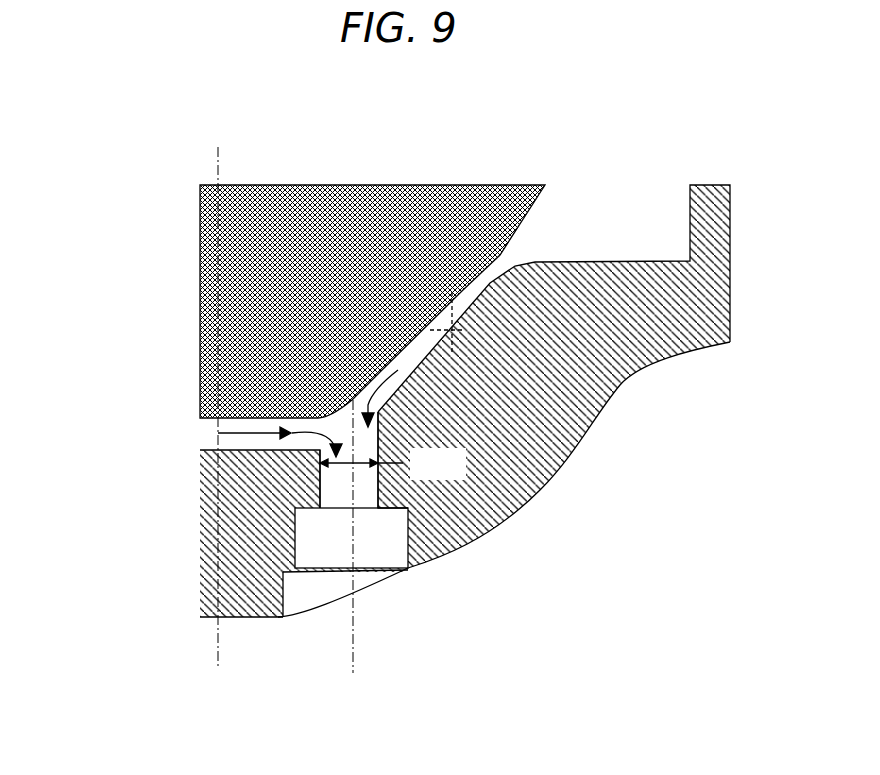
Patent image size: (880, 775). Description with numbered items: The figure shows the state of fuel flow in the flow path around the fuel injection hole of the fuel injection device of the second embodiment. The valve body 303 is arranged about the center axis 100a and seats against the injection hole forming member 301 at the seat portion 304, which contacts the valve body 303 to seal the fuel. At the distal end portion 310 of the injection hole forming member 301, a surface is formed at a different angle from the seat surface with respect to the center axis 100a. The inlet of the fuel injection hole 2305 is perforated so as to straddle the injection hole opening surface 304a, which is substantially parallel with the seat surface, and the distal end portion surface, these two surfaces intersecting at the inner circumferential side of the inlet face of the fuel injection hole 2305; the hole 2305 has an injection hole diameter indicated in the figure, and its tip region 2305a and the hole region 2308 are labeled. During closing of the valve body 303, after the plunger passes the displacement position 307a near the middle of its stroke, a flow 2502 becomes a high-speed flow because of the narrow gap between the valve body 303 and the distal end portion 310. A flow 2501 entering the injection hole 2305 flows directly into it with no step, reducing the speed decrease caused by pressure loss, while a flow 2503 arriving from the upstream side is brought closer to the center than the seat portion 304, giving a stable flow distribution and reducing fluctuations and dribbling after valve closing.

The center axis 100a is at (220, 176).
The valve body 303 is at (333, 230).
The displacement position 307a is at (434, 307).
The flow 2503 is at (392, 375).
The flow 2501 is at (334, 418).
The flow 2502 is at (272, 425).
The distal end portion 310 is at (210, 446).
The fuel injection hole of diameter D 2308 is at (318, 452).
The fuel injection hole 2305 is at (350, 472).
The fuel nozzle tip 2305a is at (372, 593).
The injection hole forming member 301 is at (633, 372).
The seat portion 304 is at (455, 333).
The injection hole opening surface 304a is at (413, 370).